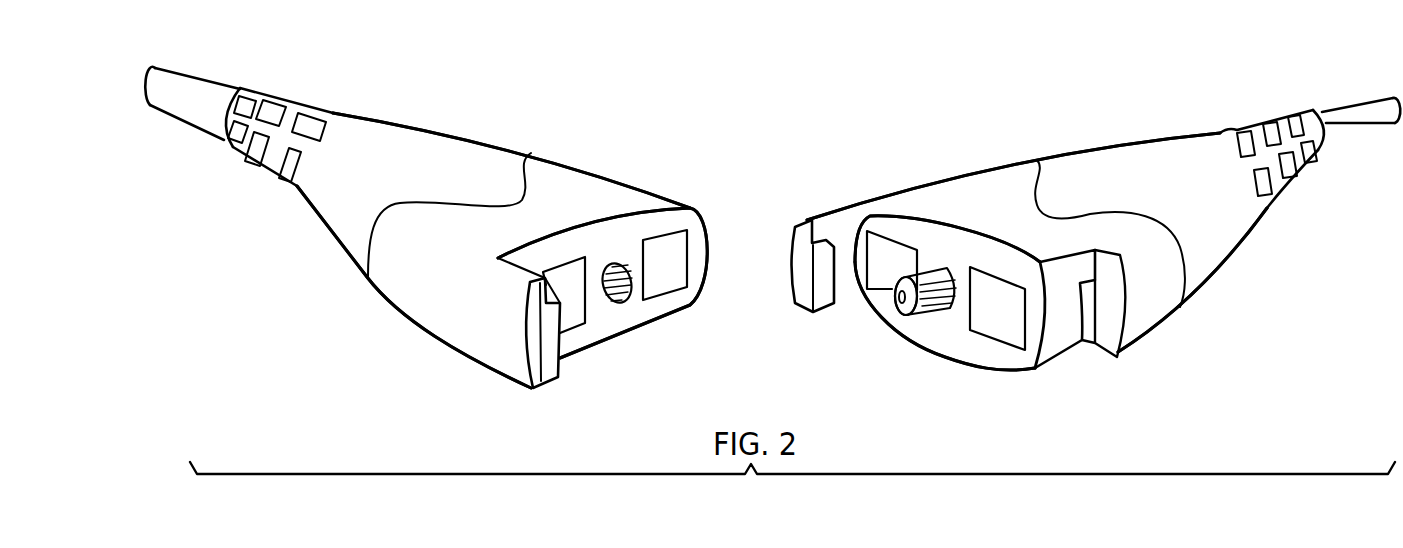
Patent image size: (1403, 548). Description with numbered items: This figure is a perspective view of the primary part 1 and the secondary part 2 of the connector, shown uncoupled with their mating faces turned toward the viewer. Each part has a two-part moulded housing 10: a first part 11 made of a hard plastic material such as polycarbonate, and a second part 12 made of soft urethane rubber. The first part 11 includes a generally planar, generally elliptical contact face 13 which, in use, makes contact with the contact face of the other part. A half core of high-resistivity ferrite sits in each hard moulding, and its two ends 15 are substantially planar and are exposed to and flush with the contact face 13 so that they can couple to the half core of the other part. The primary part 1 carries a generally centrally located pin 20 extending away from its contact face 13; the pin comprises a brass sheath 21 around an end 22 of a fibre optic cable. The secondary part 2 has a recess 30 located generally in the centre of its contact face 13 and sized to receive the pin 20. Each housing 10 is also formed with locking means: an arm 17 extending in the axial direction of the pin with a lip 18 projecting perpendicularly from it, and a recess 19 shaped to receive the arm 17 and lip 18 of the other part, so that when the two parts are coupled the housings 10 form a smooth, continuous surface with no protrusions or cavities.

The primary part 1 is at (1063, 143).
The secondary part 2 is at (470, 132).
The housing 10 is at (360, 280).
The first part 11 is at (570, 193).
The second part 12 is at (370, 150).
The contact face 13 is at (580, 335).
The ends of the half core 15 is at (672, 250).
The arm 17 is at (513, 338).
The lip 18 is at (565, 366).
The recess 19 is at (1085, 340).
The pin 20 is at (935, 277).
The brass sheath 21 is at (925, 296).
The end of fibre optic cable 22 is at (899, 302).
The recess 30 is at (623, 297).